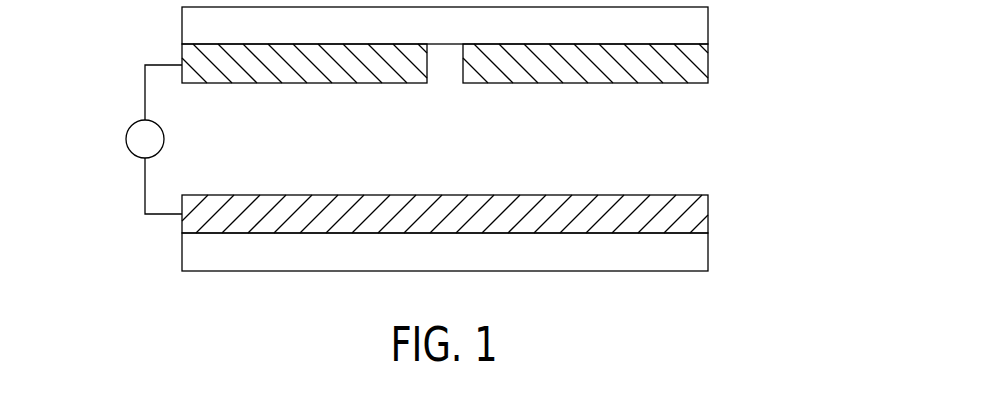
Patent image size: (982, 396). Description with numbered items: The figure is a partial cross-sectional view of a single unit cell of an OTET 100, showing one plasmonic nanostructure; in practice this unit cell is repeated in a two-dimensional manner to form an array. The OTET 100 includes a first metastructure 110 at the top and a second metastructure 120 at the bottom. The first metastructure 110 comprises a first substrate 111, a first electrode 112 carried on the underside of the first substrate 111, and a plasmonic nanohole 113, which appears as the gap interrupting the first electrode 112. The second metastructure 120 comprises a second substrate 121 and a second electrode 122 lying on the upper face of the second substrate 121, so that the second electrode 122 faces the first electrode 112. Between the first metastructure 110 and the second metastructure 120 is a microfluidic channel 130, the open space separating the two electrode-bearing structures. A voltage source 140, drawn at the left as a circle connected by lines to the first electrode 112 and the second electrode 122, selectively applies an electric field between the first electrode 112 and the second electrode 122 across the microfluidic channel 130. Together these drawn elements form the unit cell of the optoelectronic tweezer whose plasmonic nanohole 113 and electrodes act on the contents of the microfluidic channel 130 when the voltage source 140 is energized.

The OTET 100 is at (45, 36).
The first metastructure 110 is at (538, 63).
The first substrate 111 is at (708, 22).
The first electrode 112 is at (708, 57).
The plasmonic nanohole 113 is at (445, 83).
The second metastructure 120 is at (538, 233).
The second substrate 121 is at (708, 247).
The second electrode 122 is at (708, 208).
The microfluidic channel 130 is at (650, 158).
The voltage source 140 is at (126, 144).